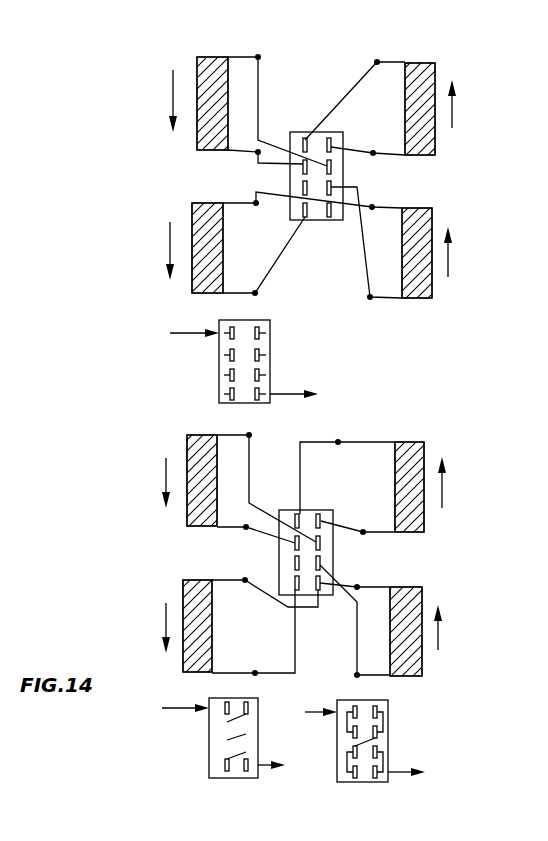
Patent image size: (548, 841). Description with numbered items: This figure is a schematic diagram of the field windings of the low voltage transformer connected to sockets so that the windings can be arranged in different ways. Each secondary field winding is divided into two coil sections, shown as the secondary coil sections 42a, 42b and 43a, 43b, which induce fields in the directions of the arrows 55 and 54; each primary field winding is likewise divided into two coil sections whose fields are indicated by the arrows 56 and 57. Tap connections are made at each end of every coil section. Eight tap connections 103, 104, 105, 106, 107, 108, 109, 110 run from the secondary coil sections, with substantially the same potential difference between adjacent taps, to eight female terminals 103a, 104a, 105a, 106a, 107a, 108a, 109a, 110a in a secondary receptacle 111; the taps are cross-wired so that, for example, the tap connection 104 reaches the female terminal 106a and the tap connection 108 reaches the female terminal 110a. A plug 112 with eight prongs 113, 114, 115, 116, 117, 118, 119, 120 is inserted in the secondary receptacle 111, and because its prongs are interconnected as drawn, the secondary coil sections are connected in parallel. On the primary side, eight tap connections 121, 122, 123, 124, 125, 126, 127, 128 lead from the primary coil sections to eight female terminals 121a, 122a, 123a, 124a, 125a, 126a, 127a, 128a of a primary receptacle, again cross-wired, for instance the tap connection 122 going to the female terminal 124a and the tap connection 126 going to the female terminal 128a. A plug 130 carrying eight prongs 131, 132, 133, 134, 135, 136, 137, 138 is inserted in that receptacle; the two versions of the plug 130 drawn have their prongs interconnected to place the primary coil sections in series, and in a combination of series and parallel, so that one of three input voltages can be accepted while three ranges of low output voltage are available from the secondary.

The secondary coil section 42a is at (213, 76).
The secondary coil section 42b is at (203, 220).
The secondary coil section 43a is at (425, 74).
The secondary coil section 43b is at (420, 240).
The field arrow 54 is at (452, 112).
The field arrow 55 is at (173, 100).
The field arrow 56 is at (166, 481).
The field arrow 57 is at (442, 487).
The tap connection 103 is at (257, 294).
The tap connection 104 is at (368, 297).
The tap connection 105 is at (257, 205).
The tap connection 106 is at (374, 205).
The tap connection 107 is at (255, 152).
The tap connection 108 is at (373, 150).
The tap connection 109 is at (258, 54).
The tap connection 110 is at (377, 59).
The female terminal 103a is at (305, 217).
The female terminal 104a is at (329, 217).
The female terminal 105a is at (303, 187).
The female terminal 106a is at (331, 188).
The female terminal 107a is at (303, 168).
The female terminal 108a is at (331, 167).
The female terminal 109a is at (304, 138).
The female terminal 110a is at (330, 138).
The secondary receptacle 111 is at (312, 132).
The plug 112 is at (251, 321).
The prong 113 is at (230, 395).
The prong 114 is at (270, 398).
The prong 115 is at (230, 376).
The prong 116 is at (262, 375).
The prong 117 is at (230, 355).
The prong 118 is at (260, 355).
The prong 119 is at (230, 330).
The prong 120 is at (260, 333).
The tap connection 121 is at (255, 671).
The tap connection 122 is at (355, 675).
The tap connection 123 is at (265, 594).
The tap connection 124 is at (358, 585).
The tap connection 125 is at (246, 525).
The tap connection 126 is at (363, 530).
The tap connection 127 is at (251, 437).
The tap connection 128 is at (338, 440).
The female terminal 121a is at (293, 590).
The female terminal 122a is at (320, 592).
The female terminal 123a is at (295, 563).
The female terminal 124a is at (320, 563).
The female terminal 125a is at (295, 543).
The female terminal 126a is at (320, 543).
The female terminal 127a is at (297, 514).
The female terminal 128a is at (318, 514).
The plug 130 is at (232, 780).
The prong 131 is at (225, 767).
The prong 132 is at (250, 778).
The prong 133 is at (353, 752).
The prong 134 is at (377, 752).
The prong 135 is at (353, 732).
The prong 136 is at (377, 732).
The prong 137 is at (225, 705).
The prong 138 is at (248, 706).